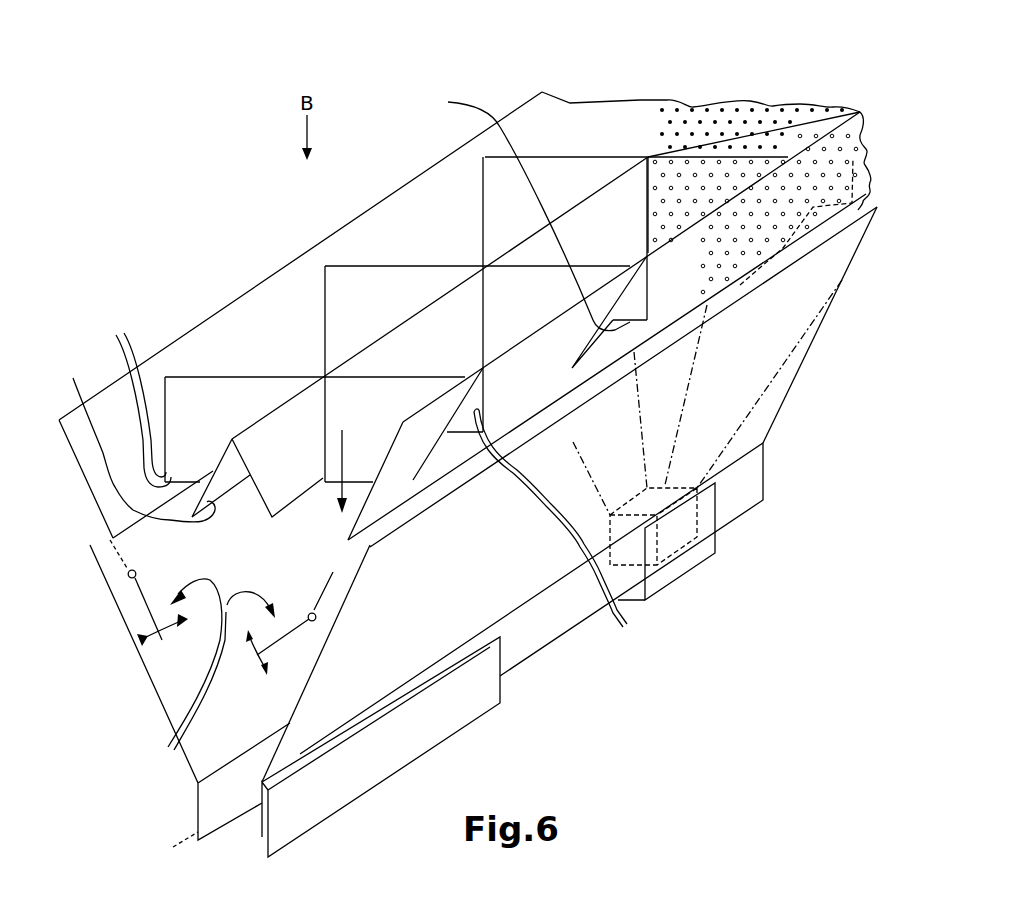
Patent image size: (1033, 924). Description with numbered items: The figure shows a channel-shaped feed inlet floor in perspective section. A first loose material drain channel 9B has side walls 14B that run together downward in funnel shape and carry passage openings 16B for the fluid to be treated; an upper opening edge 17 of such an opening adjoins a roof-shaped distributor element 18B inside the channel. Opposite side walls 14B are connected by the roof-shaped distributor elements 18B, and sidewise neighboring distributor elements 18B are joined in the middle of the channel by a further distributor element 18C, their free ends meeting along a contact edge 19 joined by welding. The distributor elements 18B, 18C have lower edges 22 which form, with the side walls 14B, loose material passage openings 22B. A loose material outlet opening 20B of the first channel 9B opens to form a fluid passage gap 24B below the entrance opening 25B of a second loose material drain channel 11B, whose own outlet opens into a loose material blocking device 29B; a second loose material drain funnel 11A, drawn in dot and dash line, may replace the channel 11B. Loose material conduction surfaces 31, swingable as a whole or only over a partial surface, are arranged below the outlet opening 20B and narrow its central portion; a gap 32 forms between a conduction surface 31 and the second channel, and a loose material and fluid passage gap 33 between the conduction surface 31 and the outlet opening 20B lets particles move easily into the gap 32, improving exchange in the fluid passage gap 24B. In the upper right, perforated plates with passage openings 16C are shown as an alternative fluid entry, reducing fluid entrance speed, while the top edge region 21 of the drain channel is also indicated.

The first loose material drain channel 9B is at (164, 326).
The top surface 21 is at (660, 125).
The second loose material drain channel 11B is at (80, 537).
The second loose material drain funnel 11A is at (765, 390).
The roof-shaped distributor element 18B is at (237, 395).
The distributor element 18C is at (445, 327).
The loose material passage opening 22B is at (343, 407).
The side wall 14B is at (730, 250).
The passage opening of perforated plate 16C is at (827, 165).
The contact edge 19 is at (687, 175).
The passage opening 16B is at (773, 220).
The lower edge 22 is at (362, 288).
The loose material outlet opening 20B is at (128, 438).
The fluid passage gap 24B is at (105, 555).
The gap 32 is at (140, 618).
The loose material conduction surface 31 is at (174, 750).
The upper opening edge 17 is at (562, 527).
The loose material blocking device 29B is at (680, 573).
The entrance opening 25B is at (398, 520).
The loose material and fluid passage gap 33 is at (337, 555).